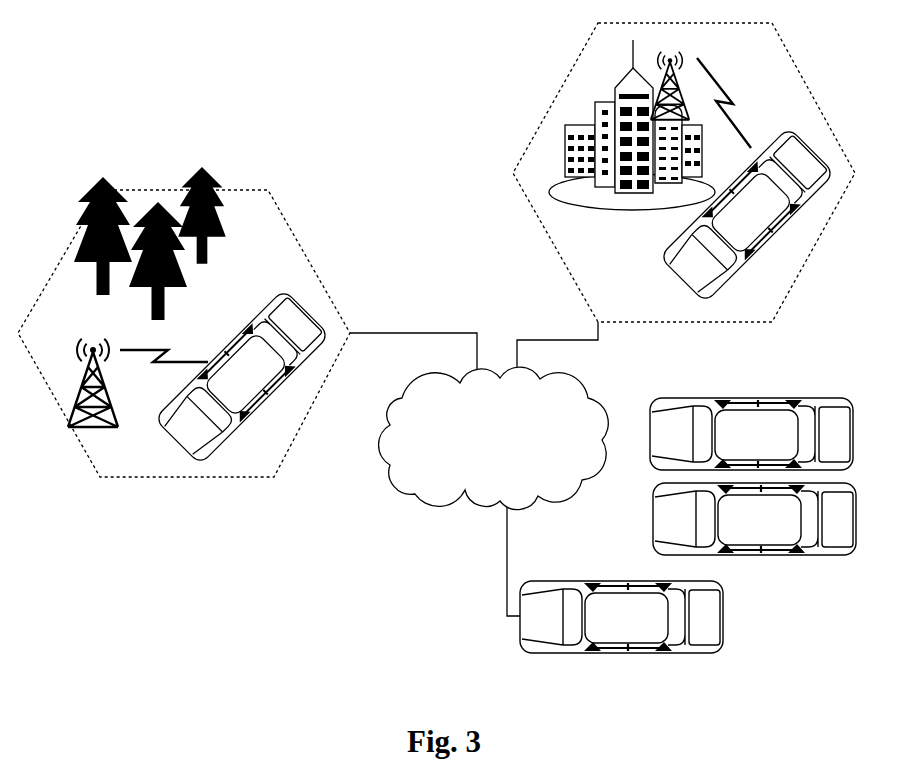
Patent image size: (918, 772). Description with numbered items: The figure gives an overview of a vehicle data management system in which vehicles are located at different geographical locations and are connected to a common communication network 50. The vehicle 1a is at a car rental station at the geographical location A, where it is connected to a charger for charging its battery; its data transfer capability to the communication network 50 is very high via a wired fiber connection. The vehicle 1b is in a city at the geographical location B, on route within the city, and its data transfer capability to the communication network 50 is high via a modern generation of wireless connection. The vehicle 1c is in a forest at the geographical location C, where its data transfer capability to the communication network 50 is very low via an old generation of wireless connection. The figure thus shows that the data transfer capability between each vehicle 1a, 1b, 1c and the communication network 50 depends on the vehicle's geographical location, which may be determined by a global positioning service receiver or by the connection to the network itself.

The vehicle 1a is at (621, 617).
The vehicle 1b is at (746, 214).
The vehicle 1c is at (241, 376).
The communication network 50 is at (494, 438).
The geographical location A is at (745, 542).
The geographical location B is at (684, 193).
The geographical location C is at (184, 343).